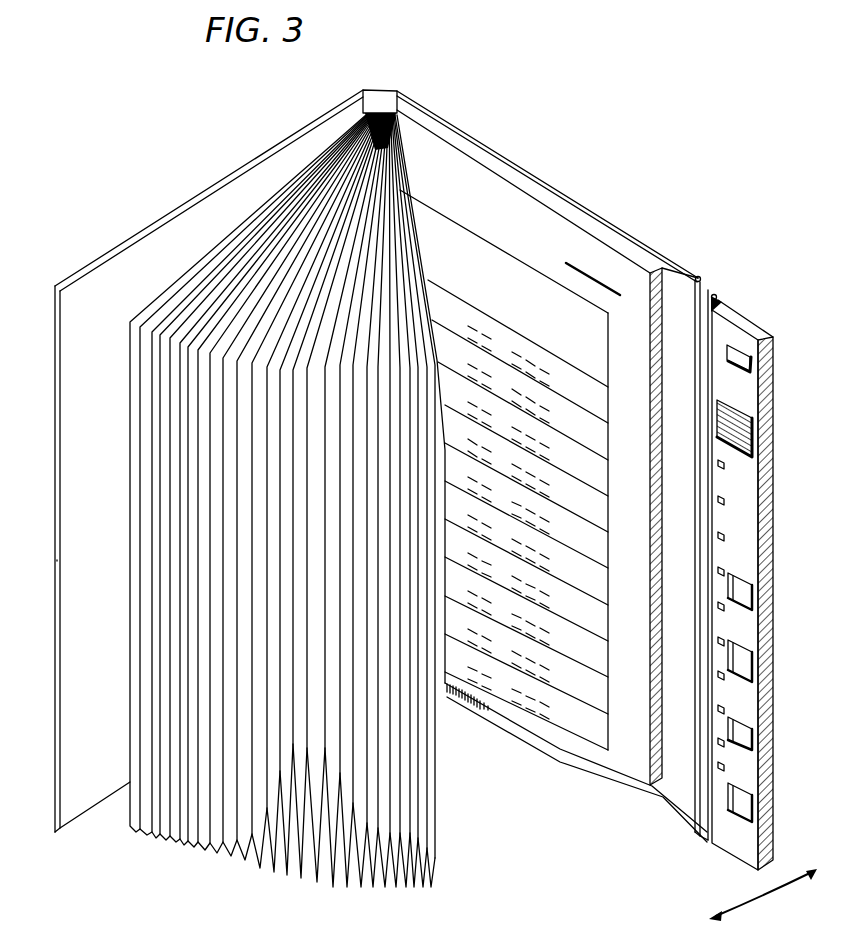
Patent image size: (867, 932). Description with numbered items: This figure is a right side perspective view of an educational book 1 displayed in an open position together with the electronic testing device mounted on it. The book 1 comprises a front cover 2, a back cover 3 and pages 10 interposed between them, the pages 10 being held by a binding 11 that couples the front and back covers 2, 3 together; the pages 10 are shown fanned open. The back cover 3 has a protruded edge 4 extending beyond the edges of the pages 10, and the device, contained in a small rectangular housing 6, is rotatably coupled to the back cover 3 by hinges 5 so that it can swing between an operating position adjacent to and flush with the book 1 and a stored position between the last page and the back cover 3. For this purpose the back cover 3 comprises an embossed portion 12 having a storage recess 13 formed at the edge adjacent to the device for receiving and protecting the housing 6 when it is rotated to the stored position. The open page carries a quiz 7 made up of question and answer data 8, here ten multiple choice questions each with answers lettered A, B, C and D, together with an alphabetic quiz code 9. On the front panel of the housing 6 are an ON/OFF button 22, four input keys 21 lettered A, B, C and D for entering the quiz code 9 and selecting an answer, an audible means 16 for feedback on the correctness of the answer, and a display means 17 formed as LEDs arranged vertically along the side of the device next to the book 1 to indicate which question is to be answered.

The educational book 1 is at (213, 178).
The front cover 2 is at (103, 332).
The back cover 3 is at (571, 197).
The protruded edge 4 is at (672, 280).
The hinges 5 is at (715, 294).
The rectangular housing 6 is at (748, 498).
The quiz 7 is at (523, 239).
The question and answer data 8 is at (470, 262).
The quiz code 9 is at (573, 240).
The pages 10 is at (203, 860).
The binding 11 is at (378, 101).
The embossed portion 12 is at (665, 790).
The storage recess 13 is at (677, 780).
The audible means 16 is at (740, 416).
The display means 17 is at (724, 533).
The input keys 21 is at (752, 598).
The ON/OFF button 22 is at (736, 345).